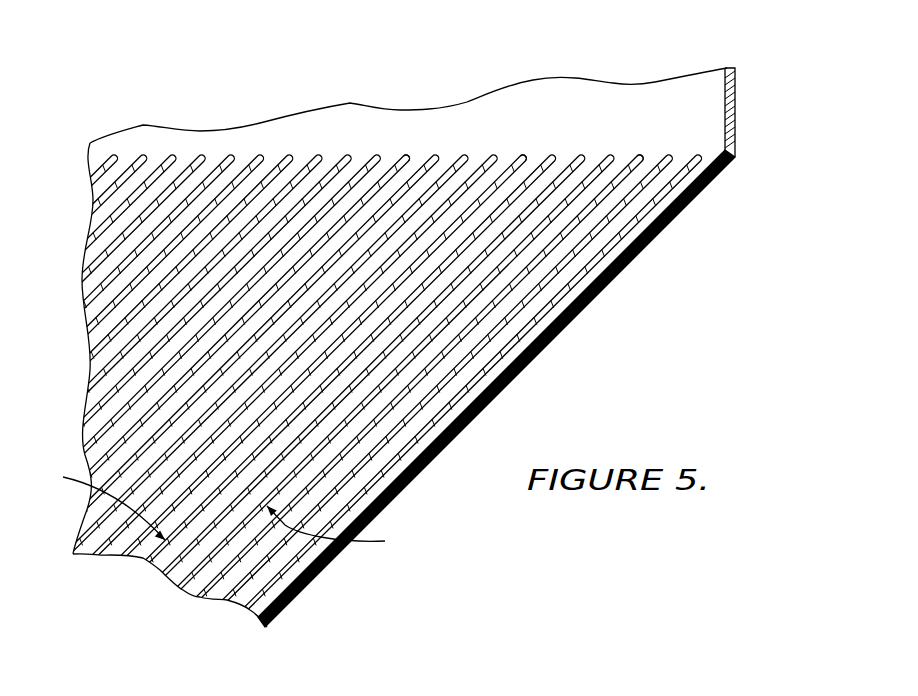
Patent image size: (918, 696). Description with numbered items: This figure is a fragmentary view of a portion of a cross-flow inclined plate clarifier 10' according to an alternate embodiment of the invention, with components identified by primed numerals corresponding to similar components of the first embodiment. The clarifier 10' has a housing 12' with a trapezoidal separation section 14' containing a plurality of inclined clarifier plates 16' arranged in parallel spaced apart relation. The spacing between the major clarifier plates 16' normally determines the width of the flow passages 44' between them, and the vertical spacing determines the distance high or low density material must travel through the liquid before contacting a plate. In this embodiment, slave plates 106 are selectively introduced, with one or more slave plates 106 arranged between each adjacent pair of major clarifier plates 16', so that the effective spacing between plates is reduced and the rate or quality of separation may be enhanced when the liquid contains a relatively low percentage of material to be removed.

The clarifier 10' is at (442, 320).
The housing 12' is at (755, 112).
The trapezoidal separation section 14' is at (496, 388).
The inclined clarifier plates 16' is at (351, 388).
The slave plates 106 is at (402, 162).
The flow passages 44' is at (217, 511).